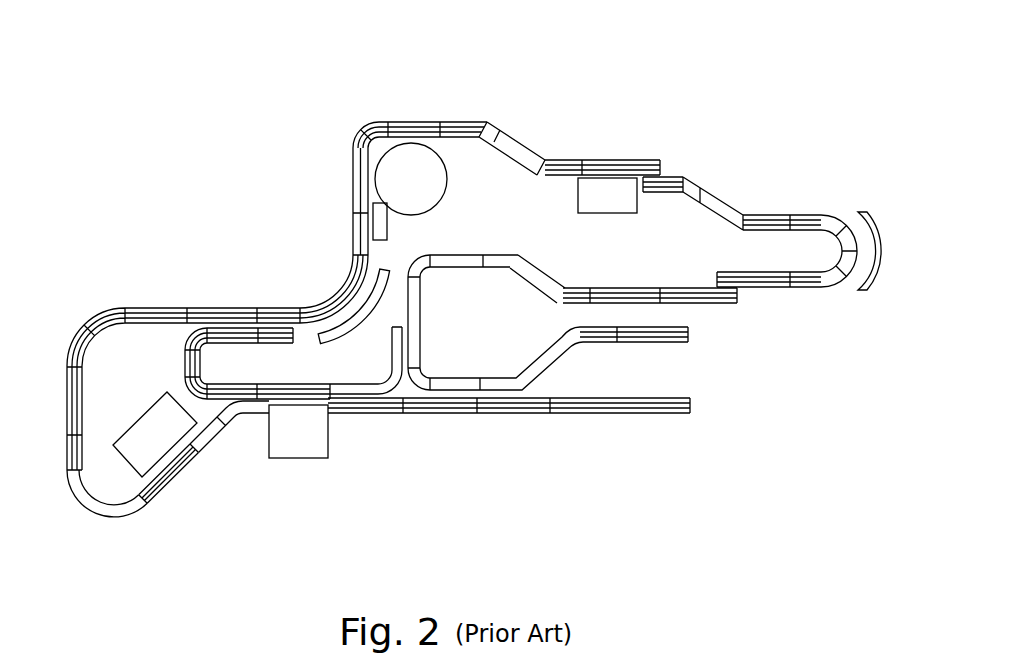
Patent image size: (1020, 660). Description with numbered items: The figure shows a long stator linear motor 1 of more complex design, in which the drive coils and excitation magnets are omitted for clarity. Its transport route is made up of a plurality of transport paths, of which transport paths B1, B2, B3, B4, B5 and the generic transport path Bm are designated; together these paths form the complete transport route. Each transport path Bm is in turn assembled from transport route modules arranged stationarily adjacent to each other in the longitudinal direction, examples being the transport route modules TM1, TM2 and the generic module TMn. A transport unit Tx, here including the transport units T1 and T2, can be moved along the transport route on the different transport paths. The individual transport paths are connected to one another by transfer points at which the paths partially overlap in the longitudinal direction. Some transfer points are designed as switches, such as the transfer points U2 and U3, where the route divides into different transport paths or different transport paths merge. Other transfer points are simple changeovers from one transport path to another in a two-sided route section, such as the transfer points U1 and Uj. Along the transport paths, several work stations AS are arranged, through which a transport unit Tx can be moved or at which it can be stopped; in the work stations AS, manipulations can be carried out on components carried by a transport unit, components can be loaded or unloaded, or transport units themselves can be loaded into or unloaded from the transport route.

The long stator linear motor 1 is at (784, 111).
The transport route module TM1 is at (452, 122).
The transport route module TM2 is at (390, 122).
The transport route module TMn is at (683, 178).
The transport path B1 is at (489, 122).
The transport path B2 is at (202, 310).
The transport path B3 is at (175, 460).
The transport path B4 is at (232, 427).
The transport path B5 is at (345, 413).
The transport path Bm is at (742, 208).
The transfer point U1 is at (633, 152).
The transfer point U2 is at (249, 304).
The transfer point U3 is at (432, 334).
The transfer point Uj is at (738, 309).
The transport unit T1 is at (365, 222).
The transport unit T2 is at (262, 320).
The transport unit Tx is at (658, 193).
The work station AS is at (423, 182).